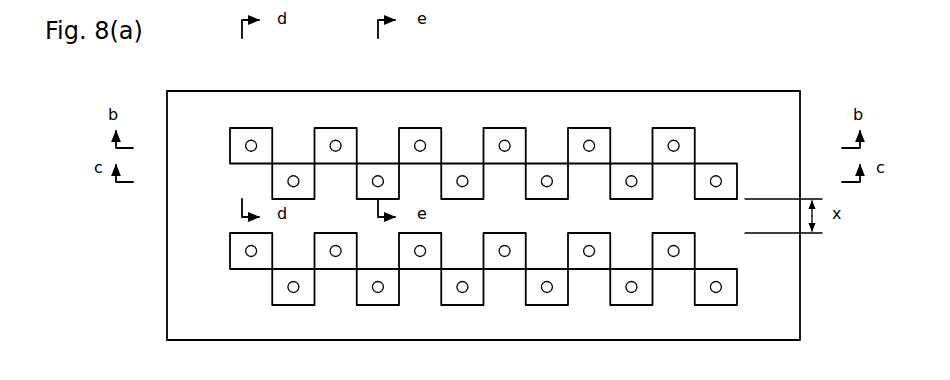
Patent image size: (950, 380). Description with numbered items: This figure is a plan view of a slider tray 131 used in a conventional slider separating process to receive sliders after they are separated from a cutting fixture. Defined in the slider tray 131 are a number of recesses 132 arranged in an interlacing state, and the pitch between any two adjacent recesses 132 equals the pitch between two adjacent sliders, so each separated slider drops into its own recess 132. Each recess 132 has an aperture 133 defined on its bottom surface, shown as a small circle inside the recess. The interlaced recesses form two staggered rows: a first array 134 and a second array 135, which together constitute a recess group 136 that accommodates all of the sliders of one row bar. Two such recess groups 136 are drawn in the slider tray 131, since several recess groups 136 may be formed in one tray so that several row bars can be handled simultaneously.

The slider tray 131 is at (597, 91).
The recess 132 is at (507, 128).
The aperture 133 is at (255, 141).
The first array 134 is at (520, 90).
The second array 135 is at (745, 173).
The recess group 136 is at (561, 107).